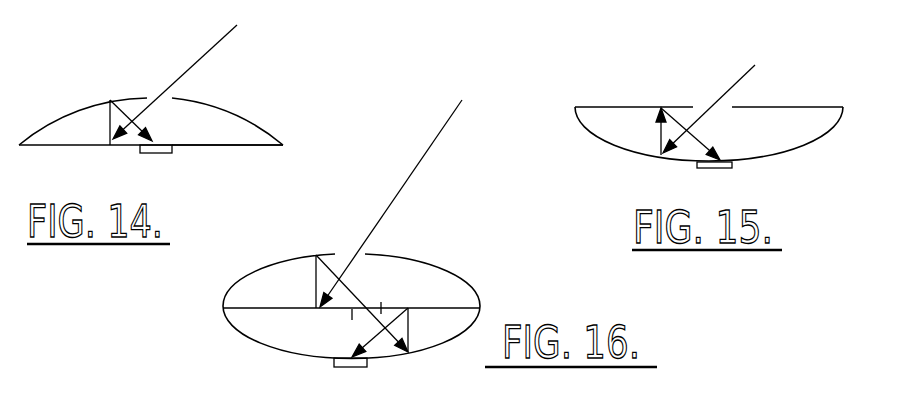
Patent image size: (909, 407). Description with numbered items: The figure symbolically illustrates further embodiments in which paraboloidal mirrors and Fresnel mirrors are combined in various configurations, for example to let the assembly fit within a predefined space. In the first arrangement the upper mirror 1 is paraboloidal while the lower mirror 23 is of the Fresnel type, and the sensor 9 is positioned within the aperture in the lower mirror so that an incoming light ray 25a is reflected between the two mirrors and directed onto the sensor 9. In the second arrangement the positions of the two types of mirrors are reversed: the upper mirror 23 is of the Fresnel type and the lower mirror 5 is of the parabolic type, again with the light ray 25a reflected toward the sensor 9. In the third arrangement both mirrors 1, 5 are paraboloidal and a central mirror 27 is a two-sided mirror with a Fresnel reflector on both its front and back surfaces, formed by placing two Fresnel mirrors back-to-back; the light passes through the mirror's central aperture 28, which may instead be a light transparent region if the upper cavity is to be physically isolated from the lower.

In FIG. 14, the upper mirror 1 is at (72, 110).
In FIG. 16, the upper mirror 1 is at (268, 264).
In FIG. 15, the lower mirror 5 is at (612, 145).
In FIG. 16, the lower mirror 5 is at (260, 343).
In FIG. 14, the sensor 9 is at (166, 160).
In FIG. 15, the sensor 9 is at (731, 168).
In FIG. 14, the Fresnel mirror 23 is at (193, 146).
In FIG. 15, the Fresnel mirror 23 is at (628, 107).
In FIG. 14, the light ray 25a is at (206, 53).
In FIG. 15, the light ray 25a is at (738, 82).
In FIG. 16, the light ray 25a is at (407, 178).
In FIG. 16, the central mirror 27 is at (292, 309).
In FIG. 16, the central aperture 28 is at (375, 302).